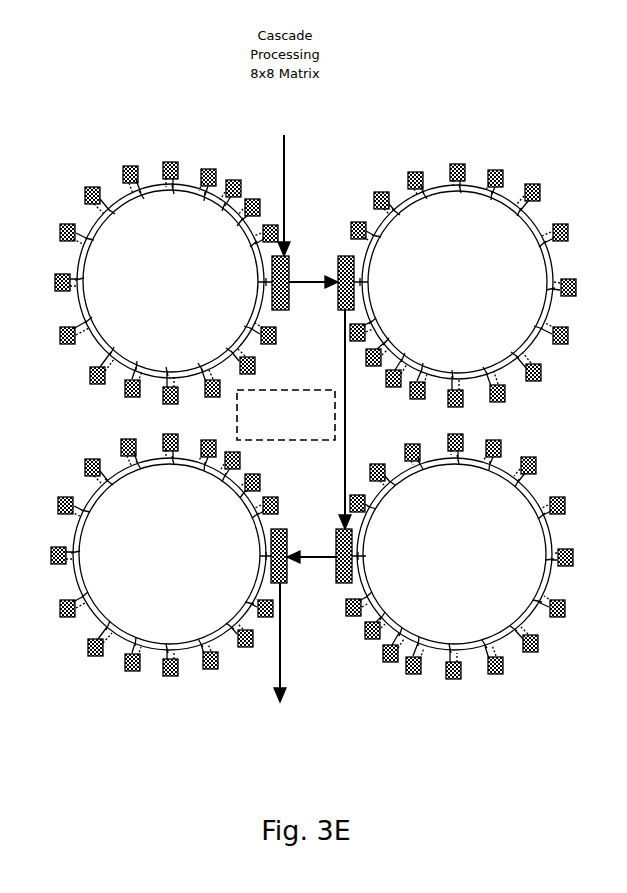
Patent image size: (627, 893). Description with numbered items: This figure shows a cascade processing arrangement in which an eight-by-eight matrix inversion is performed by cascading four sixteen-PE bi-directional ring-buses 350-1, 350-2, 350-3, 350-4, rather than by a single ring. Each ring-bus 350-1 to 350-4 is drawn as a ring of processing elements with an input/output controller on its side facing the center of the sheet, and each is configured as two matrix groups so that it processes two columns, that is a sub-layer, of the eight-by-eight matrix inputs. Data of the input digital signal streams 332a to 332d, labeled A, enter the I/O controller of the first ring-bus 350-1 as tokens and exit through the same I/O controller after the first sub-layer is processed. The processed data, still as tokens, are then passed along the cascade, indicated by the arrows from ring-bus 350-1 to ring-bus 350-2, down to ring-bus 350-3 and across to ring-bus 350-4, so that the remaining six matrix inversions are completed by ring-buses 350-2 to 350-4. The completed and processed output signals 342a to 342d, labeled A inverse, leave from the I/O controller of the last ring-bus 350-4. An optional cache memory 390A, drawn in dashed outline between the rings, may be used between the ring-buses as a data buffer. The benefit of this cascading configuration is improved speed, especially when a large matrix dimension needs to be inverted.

The ring-bus 350-1 is at (147, 294).
The ring-bus 350-2 is at (436, 294).
The ring-bus 350-3 is at (434, 565).
The ring-bus 350-4 is at (147, 565).
The cache memory 390A is at (335, 440).
The input digital signal stream 332a is at (331, 185).
The input digital signal stream 332d is at (284, 195).
The output signal 342a is at (324, 656).
The output signal 342d is at (280, 642).